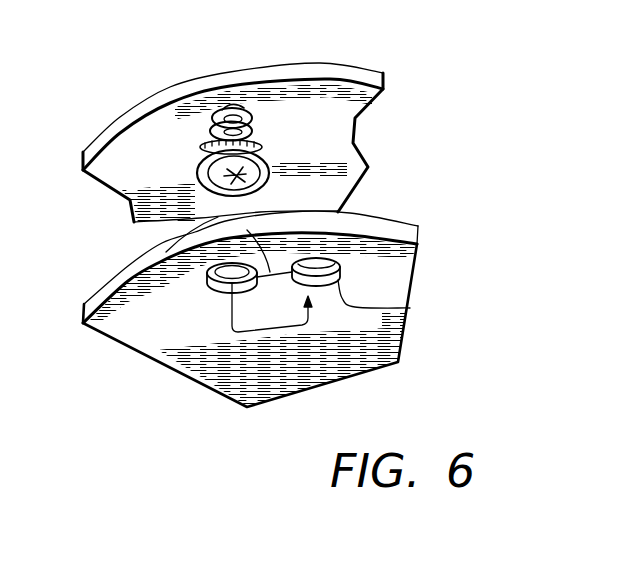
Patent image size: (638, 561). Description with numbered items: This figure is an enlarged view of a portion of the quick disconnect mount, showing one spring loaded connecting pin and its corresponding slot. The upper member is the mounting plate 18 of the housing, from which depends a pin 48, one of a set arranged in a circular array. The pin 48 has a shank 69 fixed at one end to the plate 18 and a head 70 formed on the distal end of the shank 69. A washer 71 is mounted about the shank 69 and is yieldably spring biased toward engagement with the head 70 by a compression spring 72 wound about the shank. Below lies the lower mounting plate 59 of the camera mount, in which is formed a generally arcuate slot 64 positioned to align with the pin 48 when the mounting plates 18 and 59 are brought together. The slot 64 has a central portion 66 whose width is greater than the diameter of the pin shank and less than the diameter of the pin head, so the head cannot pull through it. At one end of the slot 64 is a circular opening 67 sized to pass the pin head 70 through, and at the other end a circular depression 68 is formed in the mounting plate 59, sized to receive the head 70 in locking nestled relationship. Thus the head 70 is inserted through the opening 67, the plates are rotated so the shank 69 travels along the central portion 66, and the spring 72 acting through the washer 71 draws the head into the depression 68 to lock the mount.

The mounting plate 18 is at (354, 143).
The pin 48 is at (276, 142).
The lower mounting plate 59 is at (404, 298).
The arcuate slot 64 is at (352, 283).
The central portion 66 is at (207, 266).
The circular opening 67 is at (187, 228).
The circular depression 68 is at (410, 308).
The shank 69 is at (216, 112).
The head 70 is at (208, 174).
The washer 71 is at (205, 176).
The compression spring 72 is at (228, 104).